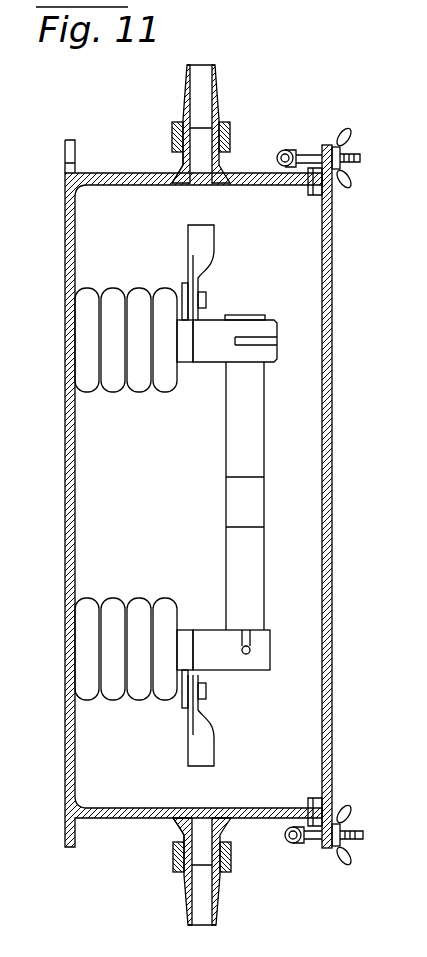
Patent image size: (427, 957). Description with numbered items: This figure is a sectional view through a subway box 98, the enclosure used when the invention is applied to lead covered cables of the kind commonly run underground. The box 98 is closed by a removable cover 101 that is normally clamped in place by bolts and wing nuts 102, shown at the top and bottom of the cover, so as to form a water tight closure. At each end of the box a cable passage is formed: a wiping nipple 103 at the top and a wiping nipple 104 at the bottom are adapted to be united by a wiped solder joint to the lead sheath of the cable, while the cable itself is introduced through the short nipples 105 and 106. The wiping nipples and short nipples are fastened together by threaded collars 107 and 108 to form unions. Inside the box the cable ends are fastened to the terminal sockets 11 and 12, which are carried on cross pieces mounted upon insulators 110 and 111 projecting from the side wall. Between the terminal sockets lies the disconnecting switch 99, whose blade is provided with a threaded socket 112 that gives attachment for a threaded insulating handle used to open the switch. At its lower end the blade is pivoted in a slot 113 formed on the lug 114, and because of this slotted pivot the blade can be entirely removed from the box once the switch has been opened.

The terminal socket 11 is at (205, 234).
The terminal socket 12 is at (206, 750).
The subway box 98 is at (88, 172).
The disconnecting switch 99 is at (255, 414).
The removable cover 101 is at (328, 300).
The bolts and wing nuts 102 is at (308, 148).
The wiping nipple 103 is at (207, 79).
The wiping nipple 104 is at (196, 888).
The short nipple 105 is at (182, 163).
The short nipple 106 is at (183, 832).
The threaded collar 107 is at (175, 131).
The threaded collar 108 is at (173, 856).
The insulator 110 is at (148, 273).
The insulator 111 is at (157, 680).
The threaded socket 112 is at (232, 487).
The slot 113 is at (252, 636).
The lug 114 is at (228, 658).